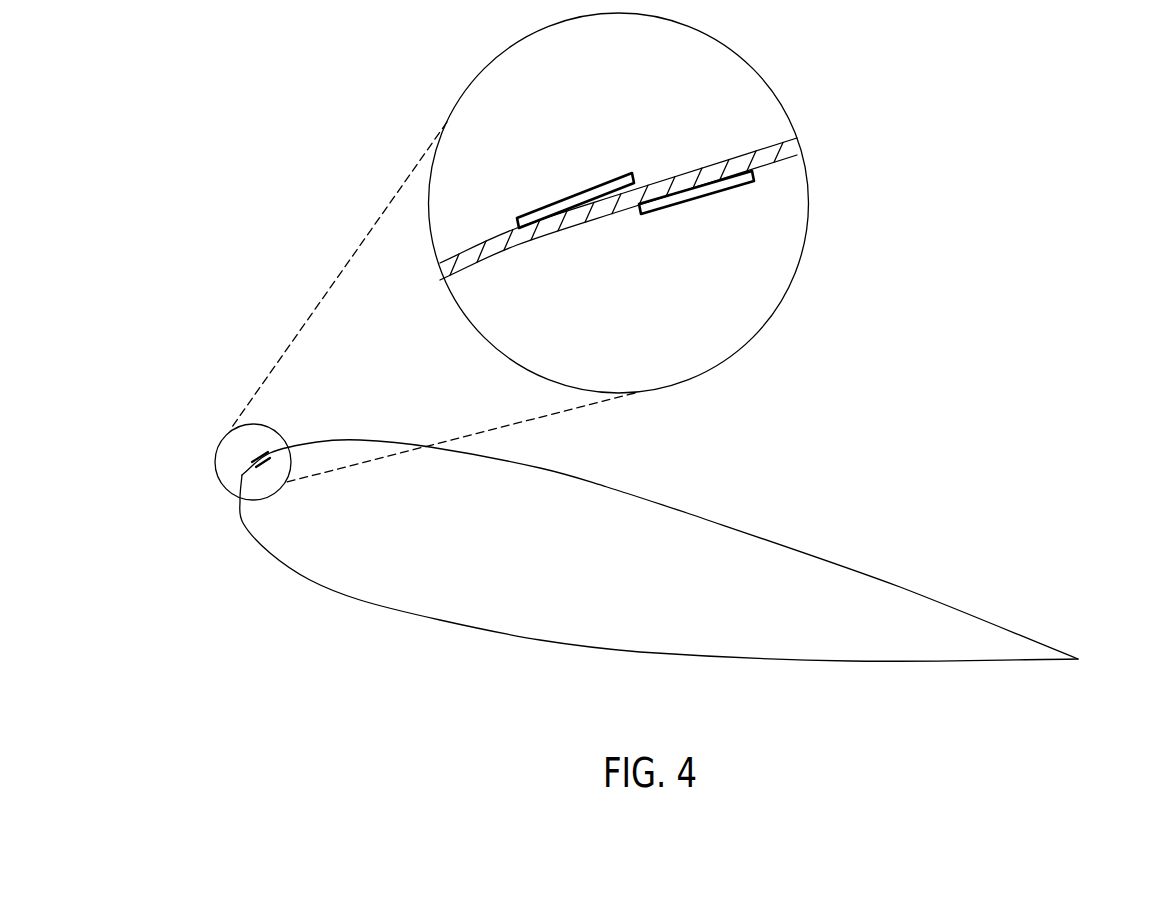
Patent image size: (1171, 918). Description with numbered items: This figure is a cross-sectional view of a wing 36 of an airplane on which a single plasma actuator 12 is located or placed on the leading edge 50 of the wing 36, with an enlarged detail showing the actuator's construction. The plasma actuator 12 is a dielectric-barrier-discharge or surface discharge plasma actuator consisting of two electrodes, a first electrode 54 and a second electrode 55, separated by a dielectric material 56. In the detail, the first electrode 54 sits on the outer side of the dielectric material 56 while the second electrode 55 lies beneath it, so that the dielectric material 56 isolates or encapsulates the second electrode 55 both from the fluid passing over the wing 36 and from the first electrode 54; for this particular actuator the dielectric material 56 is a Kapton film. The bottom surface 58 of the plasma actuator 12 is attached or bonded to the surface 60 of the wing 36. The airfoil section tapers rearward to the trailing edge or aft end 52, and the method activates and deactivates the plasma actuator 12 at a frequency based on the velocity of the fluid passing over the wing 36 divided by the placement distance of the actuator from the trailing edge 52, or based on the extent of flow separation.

The plasma actuator 12 is at (242, 476).
The wing 36 is at (667, 543).
The leading edge 50 is at (240, 512).
The trailing edge or aft end 52 is at (1080, 658).
The first electrode 54 is at (584, 192).
The second electrode 55 is at (710, 188).
The dielectric material 56 is at (690, 178).
The bottom surface 58 is at (662, 203).
The surface 60 is at (610, 488).